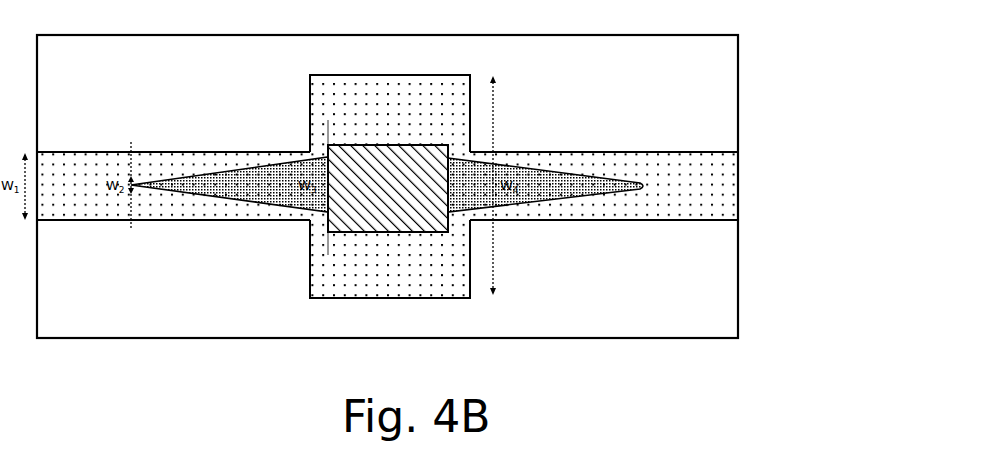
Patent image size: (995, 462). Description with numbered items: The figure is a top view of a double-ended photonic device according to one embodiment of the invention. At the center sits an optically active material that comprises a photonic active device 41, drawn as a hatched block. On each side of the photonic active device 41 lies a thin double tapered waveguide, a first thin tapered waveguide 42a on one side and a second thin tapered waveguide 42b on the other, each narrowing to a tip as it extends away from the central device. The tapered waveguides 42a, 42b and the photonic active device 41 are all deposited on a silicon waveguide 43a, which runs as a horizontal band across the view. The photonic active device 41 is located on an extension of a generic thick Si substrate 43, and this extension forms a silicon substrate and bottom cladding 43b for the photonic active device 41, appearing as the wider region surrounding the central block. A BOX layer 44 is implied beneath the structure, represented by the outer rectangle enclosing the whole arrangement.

The photonic active device 41 is at (328, 153).
The thin tapered waveguide 42a is at (537, 168).
The thin tapered waveguide 42b is at (220, 170).
The thick Si substrate 43 is at (290, 228).
The silicon waveguide 43a is at (690, 204).
The bottom cladding 43b is at (367, 256).
The BOX layer 44 is at (688, 279).